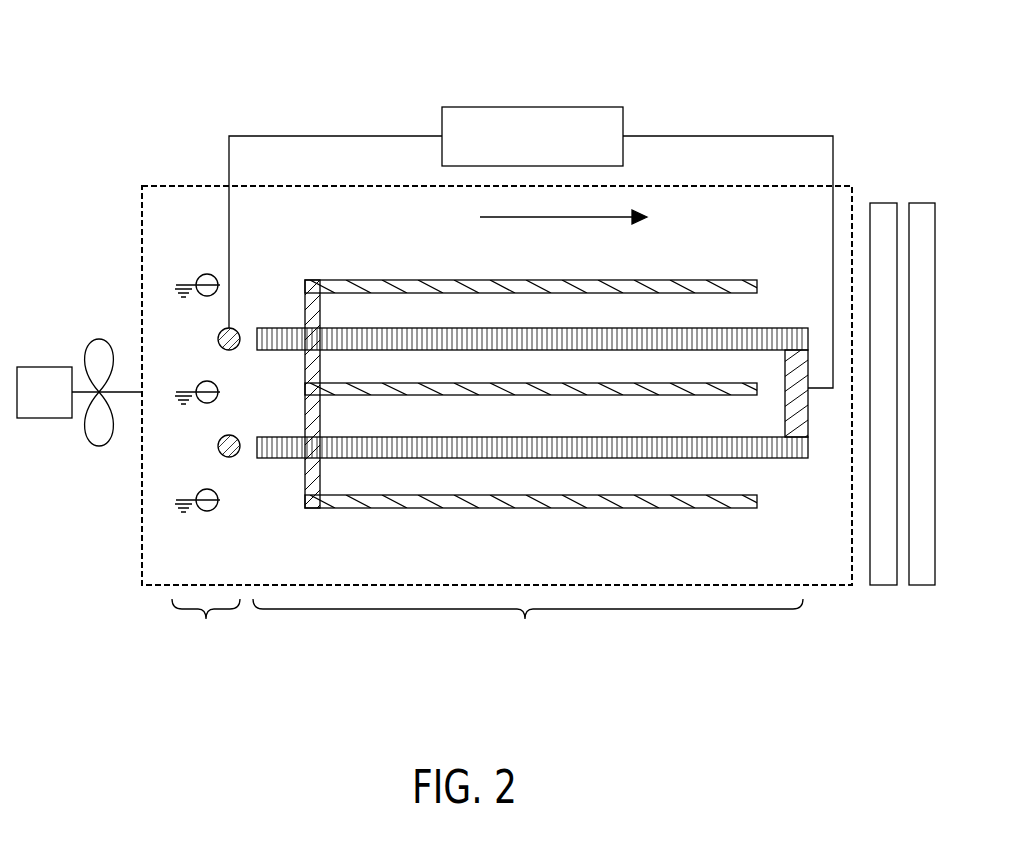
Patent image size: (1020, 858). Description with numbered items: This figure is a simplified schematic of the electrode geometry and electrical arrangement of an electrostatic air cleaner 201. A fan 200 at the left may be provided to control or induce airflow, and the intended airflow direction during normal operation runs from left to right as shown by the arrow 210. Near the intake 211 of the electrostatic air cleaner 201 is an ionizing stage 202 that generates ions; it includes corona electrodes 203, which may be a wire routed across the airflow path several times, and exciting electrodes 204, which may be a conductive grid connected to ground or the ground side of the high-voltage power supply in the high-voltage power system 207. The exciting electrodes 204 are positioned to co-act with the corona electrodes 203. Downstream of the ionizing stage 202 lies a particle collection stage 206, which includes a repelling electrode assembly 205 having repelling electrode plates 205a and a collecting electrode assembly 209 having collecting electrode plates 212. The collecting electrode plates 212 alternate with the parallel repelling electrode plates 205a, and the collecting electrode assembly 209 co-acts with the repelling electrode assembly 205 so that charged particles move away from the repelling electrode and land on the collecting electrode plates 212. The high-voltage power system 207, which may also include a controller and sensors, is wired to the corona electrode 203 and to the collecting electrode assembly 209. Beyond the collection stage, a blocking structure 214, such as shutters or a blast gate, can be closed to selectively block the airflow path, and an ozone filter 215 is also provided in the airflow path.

The fan 200 is at (86, 354).
The electrostatic air cleaner 201 is at (147, 122).
The ionizing stage 202 is at (206, 631).
The corona electrode 203 is at (218, 338).
The exciting electrode 204 is at (207, 274).
The repelling electrode assembly 205 is at (315, 492).
The repelling electrode plate 205a is at (412, 279).
The particle collection stage 206 is at (528, 631).
The high-voltage power system 207 is at (484, 107).
The collecting electrode assembly 209 is at (797, 328).
The arrow 210 is at (566, 219).
The intake 211 is at (140, 546).
The collecting electrode plate 212 is at (287, 327).
The blocking structure 214 is at (885, 203).
The ozone filter 215 is at (923, 203).